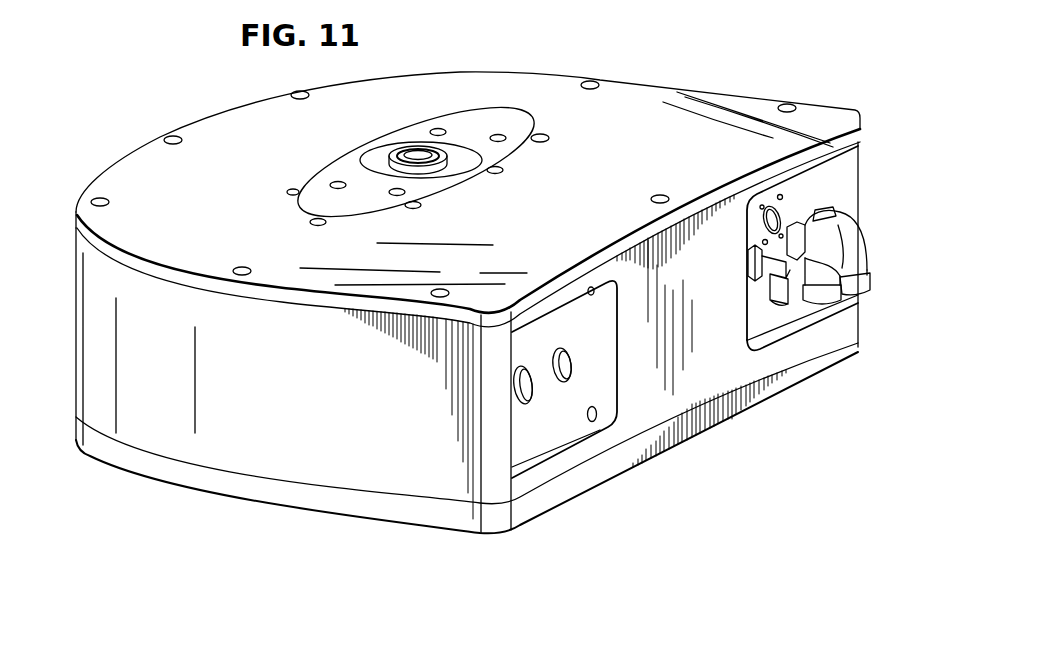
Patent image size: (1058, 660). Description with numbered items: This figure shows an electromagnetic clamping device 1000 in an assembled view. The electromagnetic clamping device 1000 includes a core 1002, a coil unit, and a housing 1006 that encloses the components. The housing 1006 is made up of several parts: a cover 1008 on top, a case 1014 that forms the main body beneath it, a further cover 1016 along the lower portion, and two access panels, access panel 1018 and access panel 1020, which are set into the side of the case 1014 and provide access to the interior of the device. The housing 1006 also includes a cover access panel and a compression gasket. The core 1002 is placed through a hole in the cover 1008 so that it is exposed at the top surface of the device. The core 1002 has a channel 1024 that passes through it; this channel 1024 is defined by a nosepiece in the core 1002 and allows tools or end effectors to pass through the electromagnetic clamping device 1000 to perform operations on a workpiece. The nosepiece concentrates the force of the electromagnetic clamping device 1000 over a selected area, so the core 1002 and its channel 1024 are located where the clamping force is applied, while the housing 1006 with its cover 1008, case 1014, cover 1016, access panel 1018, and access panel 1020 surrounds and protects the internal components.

The electromagnetic clamping device 1000 is at (708, 58).
The core 1002 is at (532, 128).
The housing 1006 is at (549, 70).
The cover 1008 is at (133, 168).
The case 1014 is at (160, 435).
The cover 1016 is at (302, 497).
The access panel 1018 is at (763, 315).
The access panel 1020 is at (550, 430).
The channel 1024 is at (412, 158).